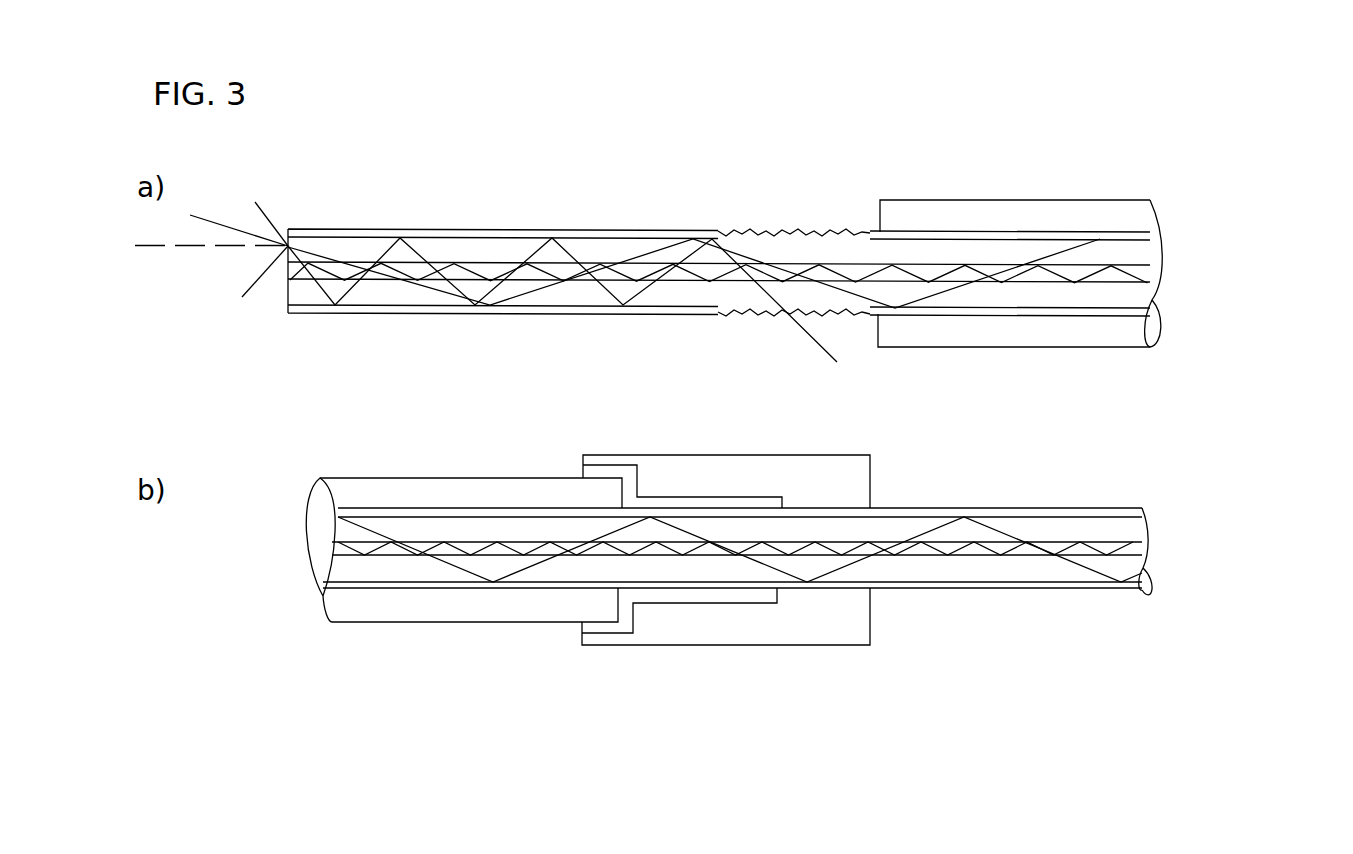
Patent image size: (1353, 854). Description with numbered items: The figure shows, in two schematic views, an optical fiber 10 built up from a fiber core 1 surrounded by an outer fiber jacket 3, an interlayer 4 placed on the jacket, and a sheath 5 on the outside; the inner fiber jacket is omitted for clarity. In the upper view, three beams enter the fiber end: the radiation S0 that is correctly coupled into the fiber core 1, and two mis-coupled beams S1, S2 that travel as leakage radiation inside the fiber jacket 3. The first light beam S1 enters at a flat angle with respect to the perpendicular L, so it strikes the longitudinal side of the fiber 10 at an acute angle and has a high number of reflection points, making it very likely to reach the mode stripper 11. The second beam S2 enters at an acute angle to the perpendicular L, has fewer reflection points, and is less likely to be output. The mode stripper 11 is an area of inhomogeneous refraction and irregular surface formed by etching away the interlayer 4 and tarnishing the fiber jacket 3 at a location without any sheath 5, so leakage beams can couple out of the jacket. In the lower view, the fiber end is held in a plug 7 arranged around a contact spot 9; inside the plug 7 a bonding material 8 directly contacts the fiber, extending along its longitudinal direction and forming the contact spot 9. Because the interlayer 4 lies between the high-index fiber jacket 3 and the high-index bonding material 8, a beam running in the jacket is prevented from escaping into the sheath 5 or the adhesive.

The fiber core 1 is at (1160, 267).
The outer fiber jacket 3 is at (1130, 255).
The interlayer 4 is at (1137, 234).
The sheath 5 is at (1098, 213).
The plug 7 is at (638, 645).
The bonding material 8 is at (693, 603).
The contact spot 9 is at (723, 610).
The fiber 10 is at (1008, 178).
The mode stripper 11 is at (812, 228).
The radiation coupled into the core S0 is at (272, 282).
The first light beam S1 is at (265, 210).
The second beam S2 is at (252, 237).
The perpendicular L is at (200, 252).